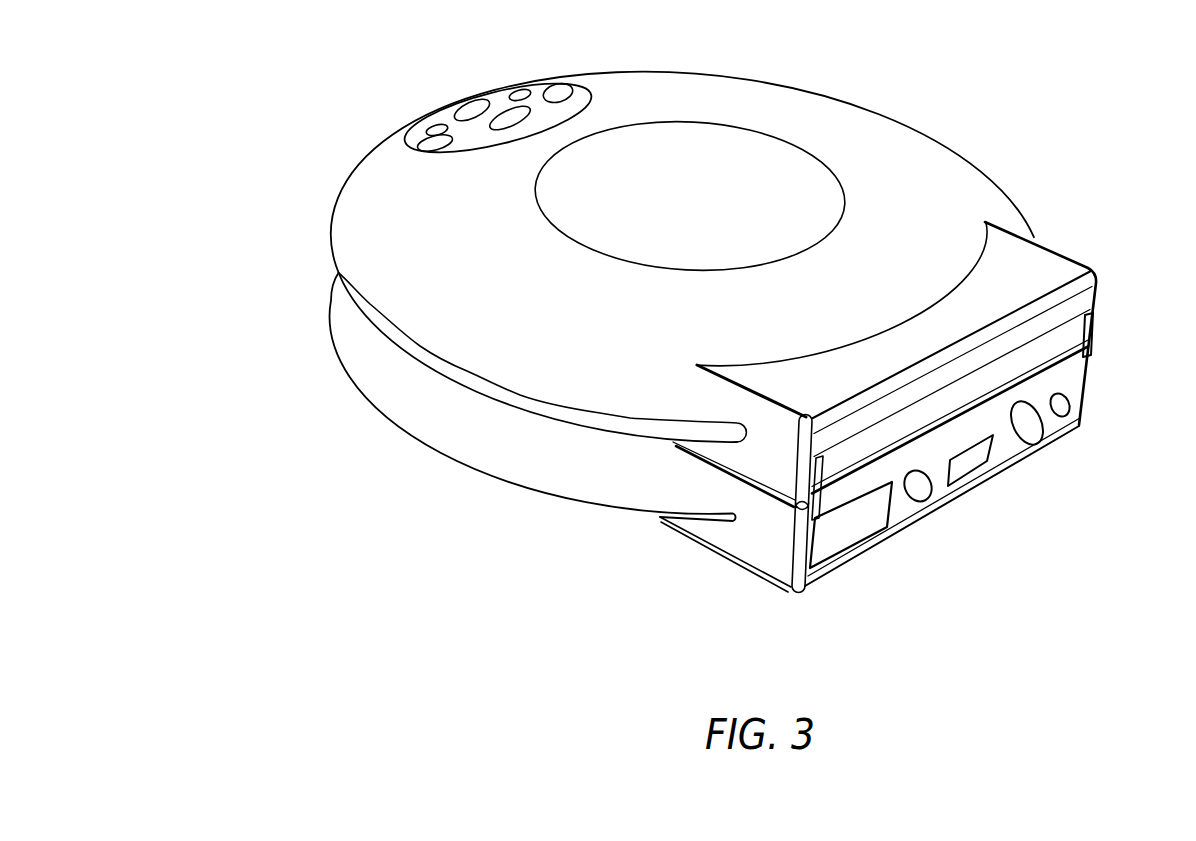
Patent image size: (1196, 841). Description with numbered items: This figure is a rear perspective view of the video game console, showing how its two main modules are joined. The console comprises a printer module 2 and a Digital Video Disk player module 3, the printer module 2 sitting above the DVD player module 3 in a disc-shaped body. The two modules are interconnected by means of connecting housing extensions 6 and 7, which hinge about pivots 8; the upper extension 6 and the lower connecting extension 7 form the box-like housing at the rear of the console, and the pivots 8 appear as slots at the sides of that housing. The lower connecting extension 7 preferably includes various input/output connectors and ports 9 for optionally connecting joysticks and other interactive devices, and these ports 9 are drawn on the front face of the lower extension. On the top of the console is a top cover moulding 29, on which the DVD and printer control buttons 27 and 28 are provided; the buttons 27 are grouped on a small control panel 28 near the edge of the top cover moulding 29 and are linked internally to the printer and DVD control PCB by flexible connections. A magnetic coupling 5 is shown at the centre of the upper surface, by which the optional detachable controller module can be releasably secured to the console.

The printer module 2 is at (370, 242).
The Digital Video Disk (DVD) player module 3 is at (443, 433).
The magnetic coupling 5 is at (752, 191).
The connecting housing extension 6 is at (1030, 268).
The lower connecting extension 7 is at (770, 557).
The pivot 8 is at (1088, 337).
The input/output connectors and ports 9 is at (1038, 440).
The DVD control buttons 27 is at (423, 118).
The printer control buttons 28 is at (530, 86).
The top cover moulding 29 is at (822, 103).